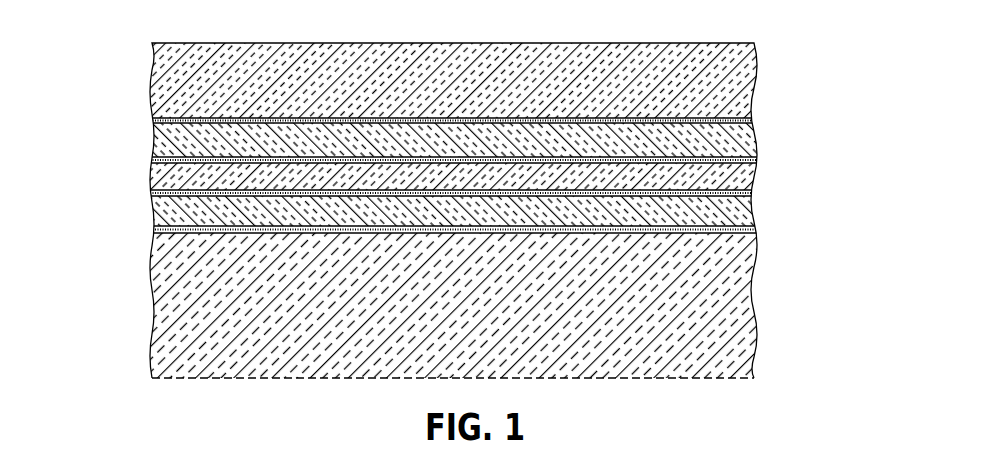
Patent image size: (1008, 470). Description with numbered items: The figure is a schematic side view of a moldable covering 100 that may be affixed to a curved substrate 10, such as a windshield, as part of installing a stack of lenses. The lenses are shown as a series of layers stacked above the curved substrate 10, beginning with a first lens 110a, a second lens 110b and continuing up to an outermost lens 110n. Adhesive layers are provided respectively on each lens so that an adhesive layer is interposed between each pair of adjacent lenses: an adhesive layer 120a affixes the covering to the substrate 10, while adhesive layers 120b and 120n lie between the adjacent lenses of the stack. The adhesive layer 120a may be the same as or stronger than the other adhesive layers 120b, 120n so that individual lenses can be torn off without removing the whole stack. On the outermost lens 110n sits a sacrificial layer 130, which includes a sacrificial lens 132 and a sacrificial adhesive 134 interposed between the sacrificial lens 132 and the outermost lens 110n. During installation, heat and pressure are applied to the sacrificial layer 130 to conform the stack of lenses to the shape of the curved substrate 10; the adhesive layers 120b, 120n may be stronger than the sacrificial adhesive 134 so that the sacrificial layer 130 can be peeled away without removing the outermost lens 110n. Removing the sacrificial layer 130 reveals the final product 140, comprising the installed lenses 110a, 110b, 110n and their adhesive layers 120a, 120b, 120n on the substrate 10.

The curved substrate 10 is at (165, 280).
The moldable covering 100 is at (483, 163).
The sacrificial layer 130 is at (533, 83).
The sacrificial lens 132 is at (733, 72).
The sacrificial adhesive 134 is at (740, 117).
The final product 140 is at (533, 200).
The outermost lens 110n is at (740, 138).
The adhesive layer 120n is at (752, 159).
The lens 110b is at (743, 180).
The adhesive layer 120b is at (752, 194).
The lens 110a is at (745, 212).
The adhesive layer 120a is at (496, 253).